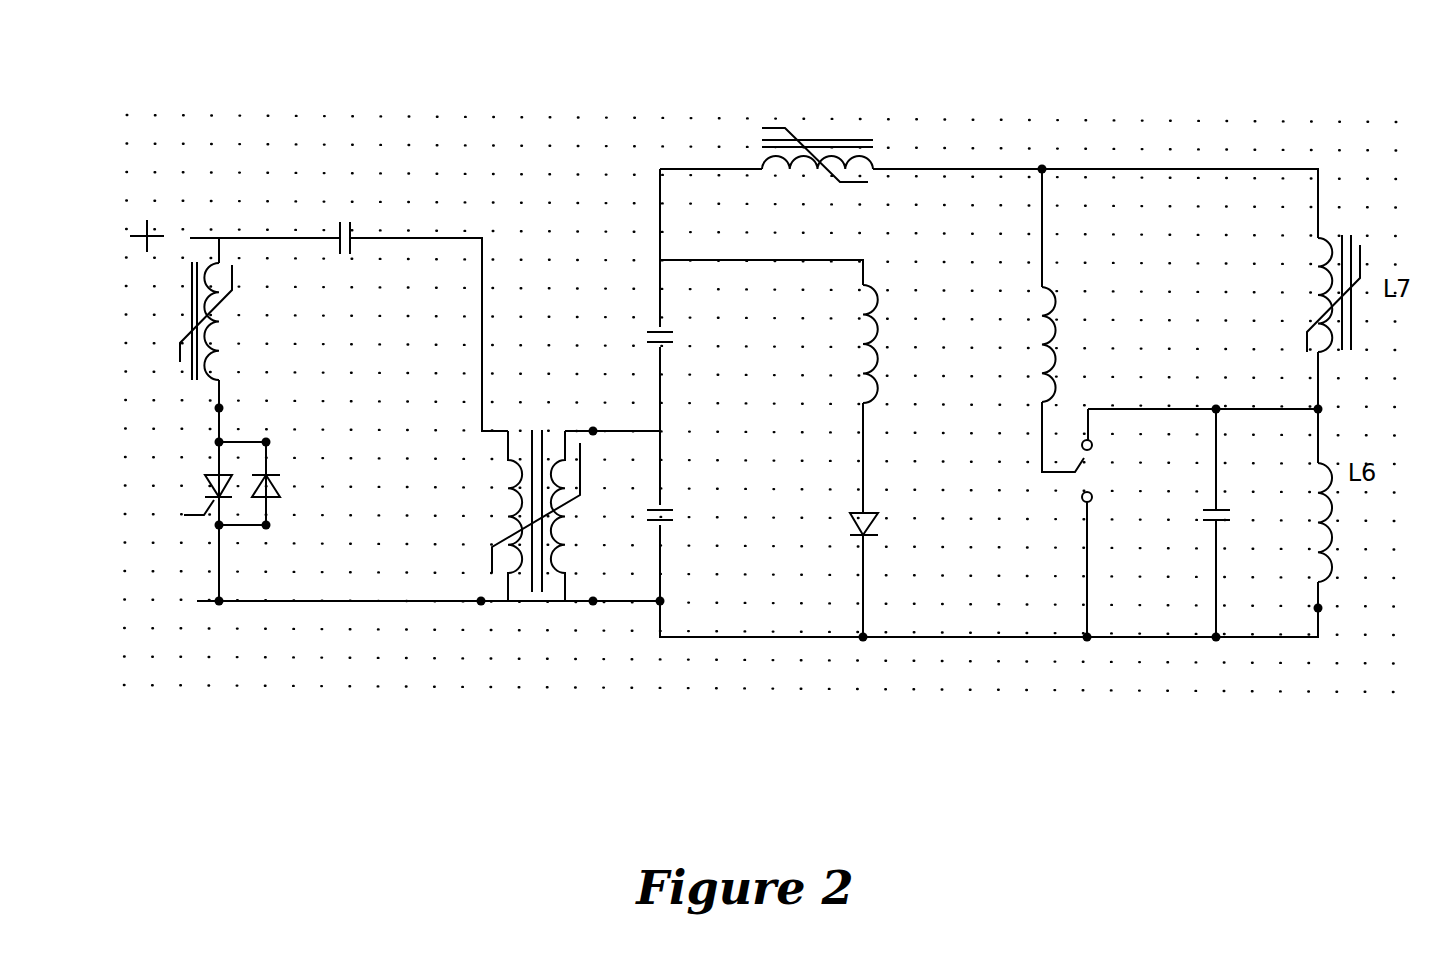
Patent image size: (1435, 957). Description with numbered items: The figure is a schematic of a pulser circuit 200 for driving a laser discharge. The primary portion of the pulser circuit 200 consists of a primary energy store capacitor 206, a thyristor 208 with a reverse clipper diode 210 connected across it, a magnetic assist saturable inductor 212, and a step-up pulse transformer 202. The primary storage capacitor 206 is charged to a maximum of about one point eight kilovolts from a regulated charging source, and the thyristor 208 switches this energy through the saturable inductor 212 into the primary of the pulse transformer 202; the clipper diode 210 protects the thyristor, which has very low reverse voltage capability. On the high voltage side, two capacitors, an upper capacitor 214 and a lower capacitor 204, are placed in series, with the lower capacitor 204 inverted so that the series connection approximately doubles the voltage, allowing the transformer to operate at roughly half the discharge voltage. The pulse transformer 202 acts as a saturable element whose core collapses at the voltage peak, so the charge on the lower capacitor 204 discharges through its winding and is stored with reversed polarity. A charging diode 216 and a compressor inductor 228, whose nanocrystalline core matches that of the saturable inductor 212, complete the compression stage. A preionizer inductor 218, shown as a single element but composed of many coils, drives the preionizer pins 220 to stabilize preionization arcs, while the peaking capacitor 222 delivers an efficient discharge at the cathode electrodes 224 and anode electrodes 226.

The pulser circuit 200 is at (266, 771).
The pulse transformer T1 202 is at (543, 603).
The capacitor C2 204 is at (672, 510).
The primary energy store capacitor C1 206 is at (350, 248).
The thyristor Q1 208 is at (185, 487).
The reverse clipper diode D2 210 is at (283, 504).
The magnetic assist saturable inductor L1 212 is at (232, 336).
The capacitor C3 214 is at (673, 337).
The charging diode D1 216 is at (870, 507).
The inductor L5 218 is at (1050, 332).
The preionizer pins P 220 is at (1067, 487).
The peaking capacitor C4 222 is at (1220, 507).
The cathode electrodes C 224 is at (1080, 443).
The anode electrodes A 226 is at (1093, 496).
The inductor L3 228 is at (833, 122).